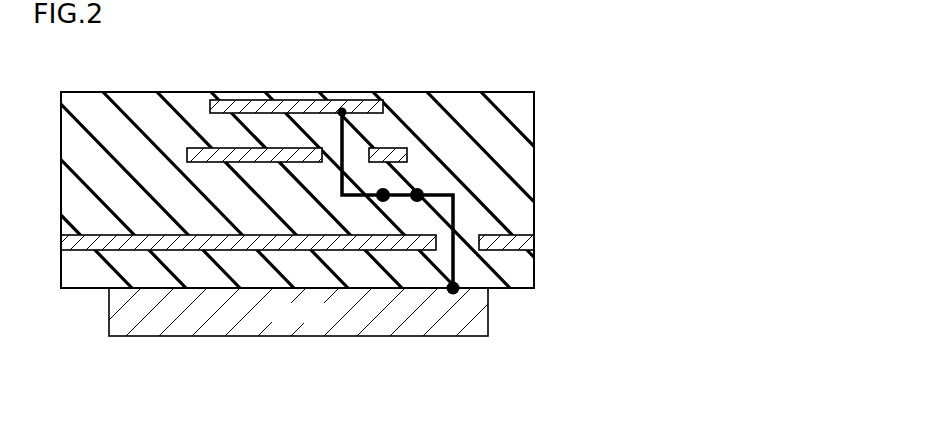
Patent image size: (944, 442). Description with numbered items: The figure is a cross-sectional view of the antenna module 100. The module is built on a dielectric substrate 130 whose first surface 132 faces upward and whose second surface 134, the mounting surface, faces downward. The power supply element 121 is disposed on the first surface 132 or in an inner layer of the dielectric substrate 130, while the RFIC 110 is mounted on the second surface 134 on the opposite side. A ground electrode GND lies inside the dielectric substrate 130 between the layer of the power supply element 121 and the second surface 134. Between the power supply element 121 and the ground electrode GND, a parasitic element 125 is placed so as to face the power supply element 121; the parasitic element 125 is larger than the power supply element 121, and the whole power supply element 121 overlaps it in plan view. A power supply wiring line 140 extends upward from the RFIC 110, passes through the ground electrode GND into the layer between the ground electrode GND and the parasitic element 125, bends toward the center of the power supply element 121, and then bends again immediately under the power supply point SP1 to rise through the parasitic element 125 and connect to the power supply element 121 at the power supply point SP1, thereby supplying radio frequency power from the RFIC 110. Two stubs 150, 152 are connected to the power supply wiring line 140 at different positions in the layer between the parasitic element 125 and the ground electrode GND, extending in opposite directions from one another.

The antenna module 100 is at (504, 61).
The RFIC 110 is at (453, 323).
The power supply element 121 is at (237, 98).
The parasitic element 125 is at (397, 148).
The dielectric substrate 130 is at (534, 131).
The first surface 132 is at (500, 92).
The second surface 134 is at (507, 288).
The power supply wiring line 140 is at (455, 207).
The stub 150 is at (418, 193).
The stub 152 is at (386, 192).
The power supply point SP1 is at (342, 108).
The ground electrode GND is at (534, 243).